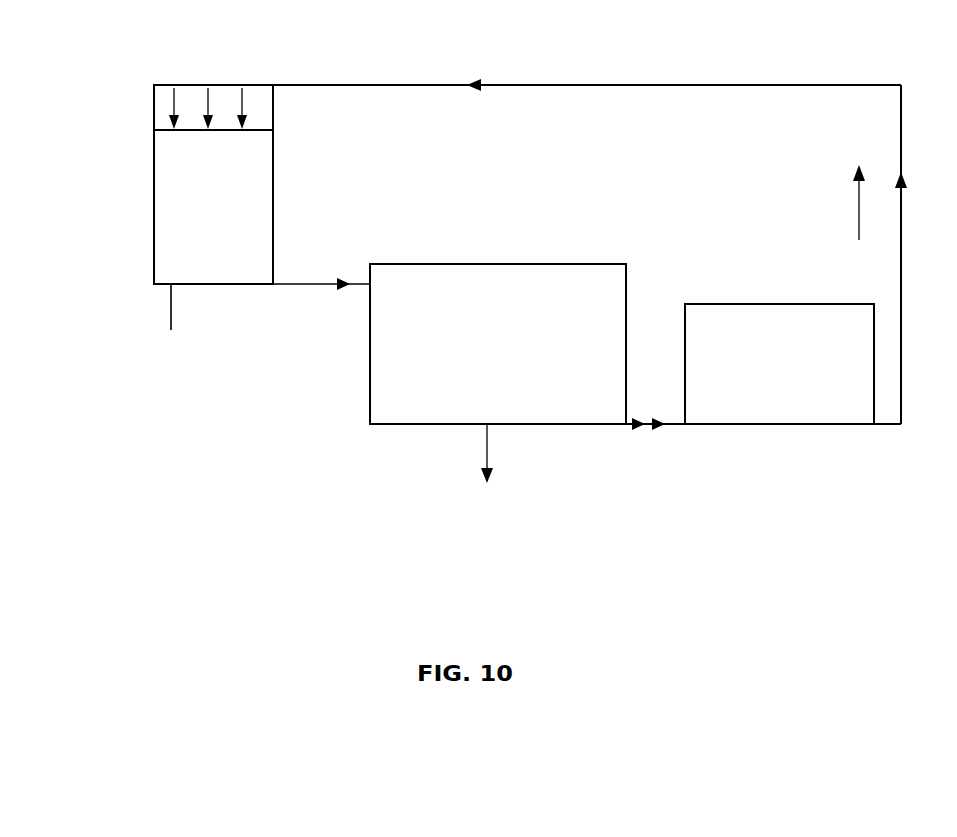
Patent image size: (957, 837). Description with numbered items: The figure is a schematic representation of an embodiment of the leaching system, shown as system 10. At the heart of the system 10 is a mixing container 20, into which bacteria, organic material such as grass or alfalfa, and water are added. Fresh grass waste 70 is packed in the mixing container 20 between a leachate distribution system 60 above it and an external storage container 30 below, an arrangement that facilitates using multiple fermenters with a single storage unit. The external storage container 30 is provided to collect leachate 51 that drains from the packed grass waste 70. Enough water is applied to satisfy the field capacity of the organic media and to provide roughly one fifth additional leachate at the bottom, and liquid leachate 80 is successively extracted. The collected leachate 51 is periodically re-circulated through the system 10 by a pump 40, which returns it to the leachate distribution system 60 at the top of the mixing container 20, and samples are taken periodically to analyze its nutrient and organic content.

The system 10 is at (116, 97).
The mixing container 20 is at (172, 329).
The external storage container 30 is at (370, 380).
The pump 40 is at (785, 424).
The leachate 51 is at (831, 202).
The leachate distribution system 60 is at (226, 85).
The fresh grass waste 70 is at (213, 184).
The liquid leachate 80 is at (490, 476).